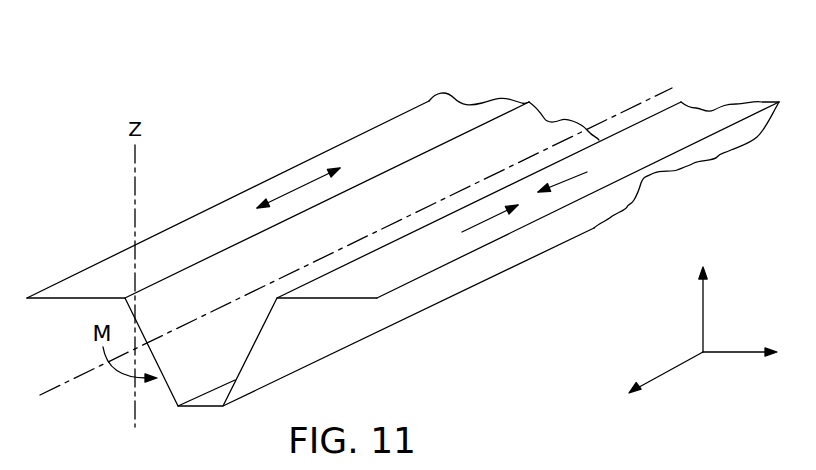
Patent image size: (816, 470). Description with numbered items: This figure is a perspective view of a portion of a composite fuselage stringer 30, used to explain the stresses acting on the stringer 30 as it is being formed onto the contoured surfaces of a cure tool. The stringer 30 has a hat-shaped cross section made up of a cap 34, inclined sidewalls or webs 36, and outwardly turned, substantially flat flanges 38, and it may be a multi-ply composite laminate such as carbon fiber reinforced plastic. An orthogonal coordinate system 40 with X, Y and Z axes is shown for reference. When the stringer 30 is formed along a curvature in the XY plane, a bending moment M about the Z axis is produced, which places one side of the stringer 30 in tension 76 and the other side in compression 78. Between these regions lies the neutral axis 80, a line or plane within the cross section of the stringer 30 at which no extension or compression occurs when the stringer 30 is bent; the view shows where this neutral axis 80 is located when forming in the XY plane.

The stringer 30 is at (587, 72).
The cap 34 is at (203, 408).
The inclined sidewalls or webs 36 is at (716, 147).
The flanges 38 is at (92, 281).
The orthogonal coordinate system 40 is at (674, 324).
The tension 76 is at (300, 188).
The compression 78 is at (490, 218).
The neutral axis 80 is at (66, 378).